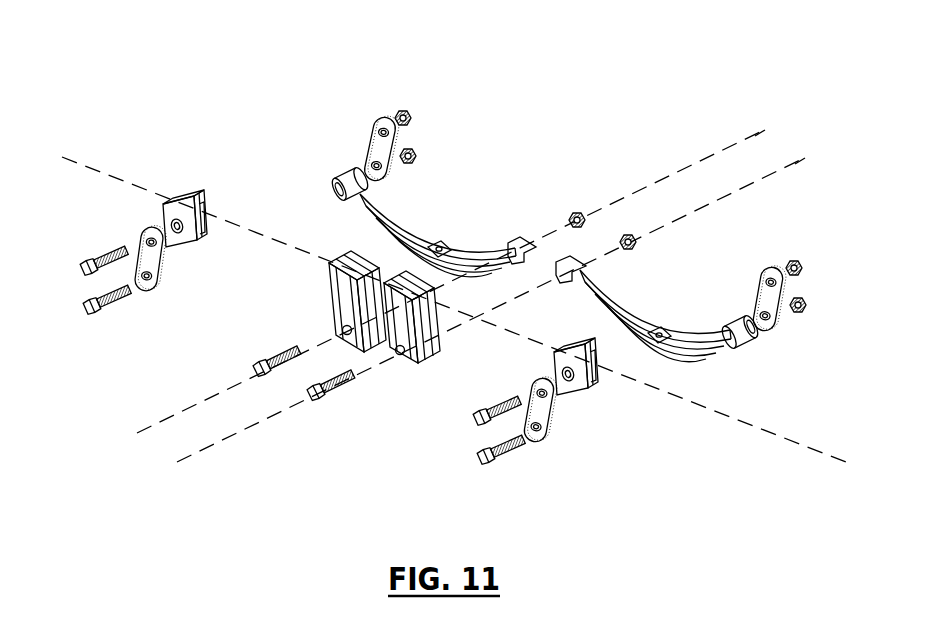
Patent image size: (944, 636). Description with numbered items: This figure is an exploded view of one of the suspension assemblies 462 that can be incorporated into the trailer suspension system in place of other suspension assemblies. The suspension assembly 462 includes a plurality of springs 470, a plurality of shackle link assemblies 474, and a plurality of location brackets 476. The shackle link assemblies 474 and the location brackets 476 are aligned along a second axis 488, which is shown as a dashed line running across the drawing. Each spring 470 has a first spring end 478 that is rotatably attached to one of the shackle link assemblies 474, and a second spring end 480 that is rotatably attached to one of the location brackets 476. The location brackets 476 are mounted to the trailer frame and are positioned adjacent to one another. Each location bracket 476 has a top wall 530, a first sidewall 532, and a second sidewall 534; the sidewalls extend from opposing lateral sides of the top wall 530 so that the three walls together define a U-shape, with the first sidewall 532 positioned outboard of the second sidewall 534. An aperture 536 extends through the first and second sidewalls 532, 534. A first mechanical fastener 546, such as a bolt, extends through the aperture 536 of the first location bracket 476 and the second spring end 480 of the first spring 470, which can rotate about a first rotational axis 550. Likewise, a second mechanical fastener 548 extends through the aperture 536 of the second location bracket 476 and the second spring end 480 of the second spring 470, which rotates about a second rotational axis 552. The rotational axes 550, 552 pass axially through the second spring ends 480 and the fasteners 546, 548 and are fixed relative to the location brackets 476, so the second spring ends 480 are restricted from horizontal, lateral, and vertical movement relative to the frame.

The suspension assembly 462 is at (200, 57).
The spring 470 is at (410, 233).
The shackle link assembly 474 is at (125, 232).
The location bracket 476 is at (320, 301).
The first spring end 478 is at (330, 192).
The second spring end 480 is at (531, 237).
The second axis 488 is at (808, 448).
The top wall 530 is at (350, 268).
The first sidewall 532 is at (335, 320).
The second sidewall 534 is at (435, 355).
The aperture 536 is at (350, 334).
The first mechanical fastener 546 is at (258, 367).
The second mechanical fastener 548 is at (338, 398).
The first rotational axis 550 is at (768, 142).
The second rotational axis 552 is at (808, 170).